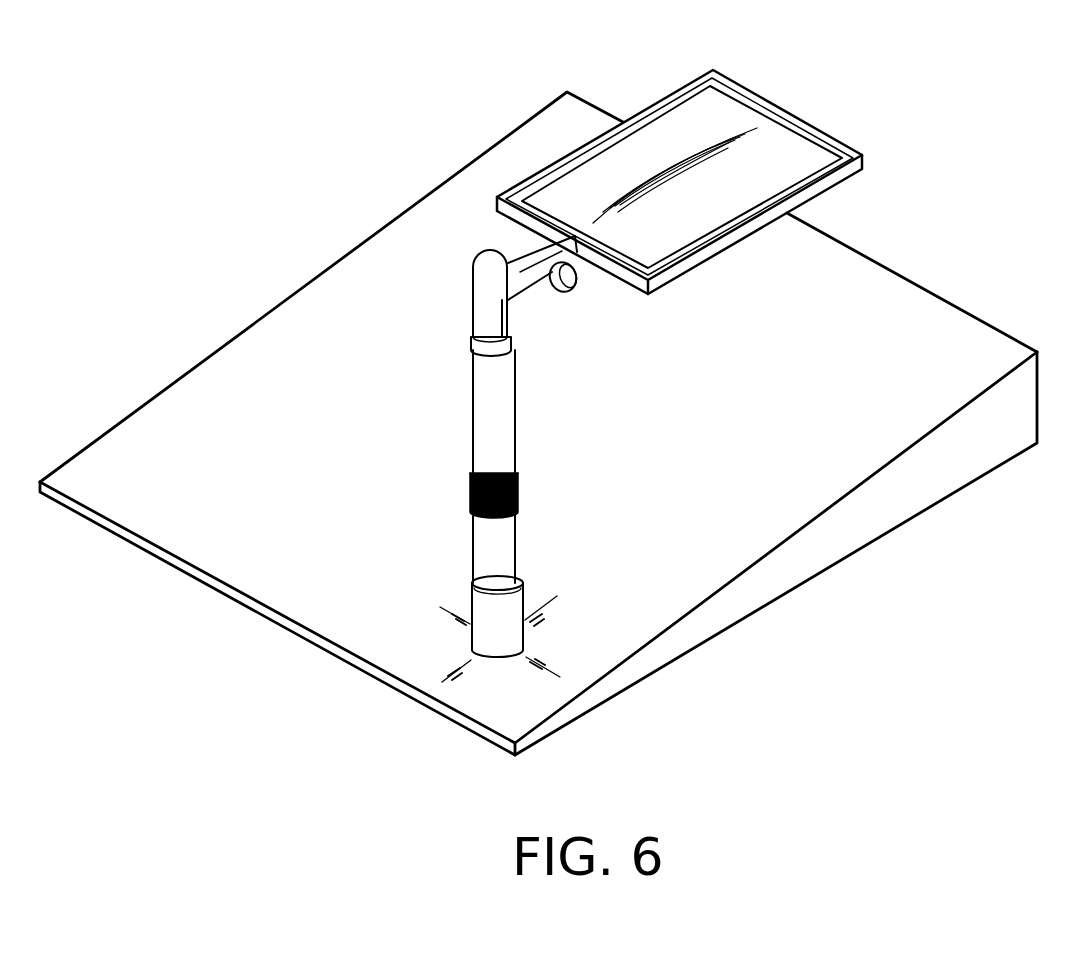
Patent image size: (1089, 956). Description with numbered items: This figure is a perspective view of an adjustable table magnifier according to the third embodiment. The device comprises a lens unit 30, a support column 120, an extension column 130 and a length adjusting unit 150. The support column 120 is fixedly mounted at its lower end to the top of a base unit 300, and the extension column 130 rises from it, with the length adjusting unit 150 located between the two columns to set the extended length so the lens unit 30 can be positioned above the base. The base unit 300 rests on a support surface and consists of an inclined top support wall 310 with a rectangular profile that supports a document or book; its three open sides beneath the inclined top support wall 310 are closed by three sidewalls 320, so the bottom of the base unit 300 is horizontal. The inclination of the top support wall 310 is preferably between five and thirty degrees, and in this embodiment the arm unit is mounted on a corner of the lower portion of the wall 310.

The lens unit 30 is at (640, 135).
The support column 120 is at (505, 558).
The extension column 130 is at (482, 312).
The length adjusting unit 150 is at (520, 493).
The base unit 300 is at (551, 423).
The inclined top support wall 310 is at (973, 337).
The sidewalls 320 is at (972, 448).